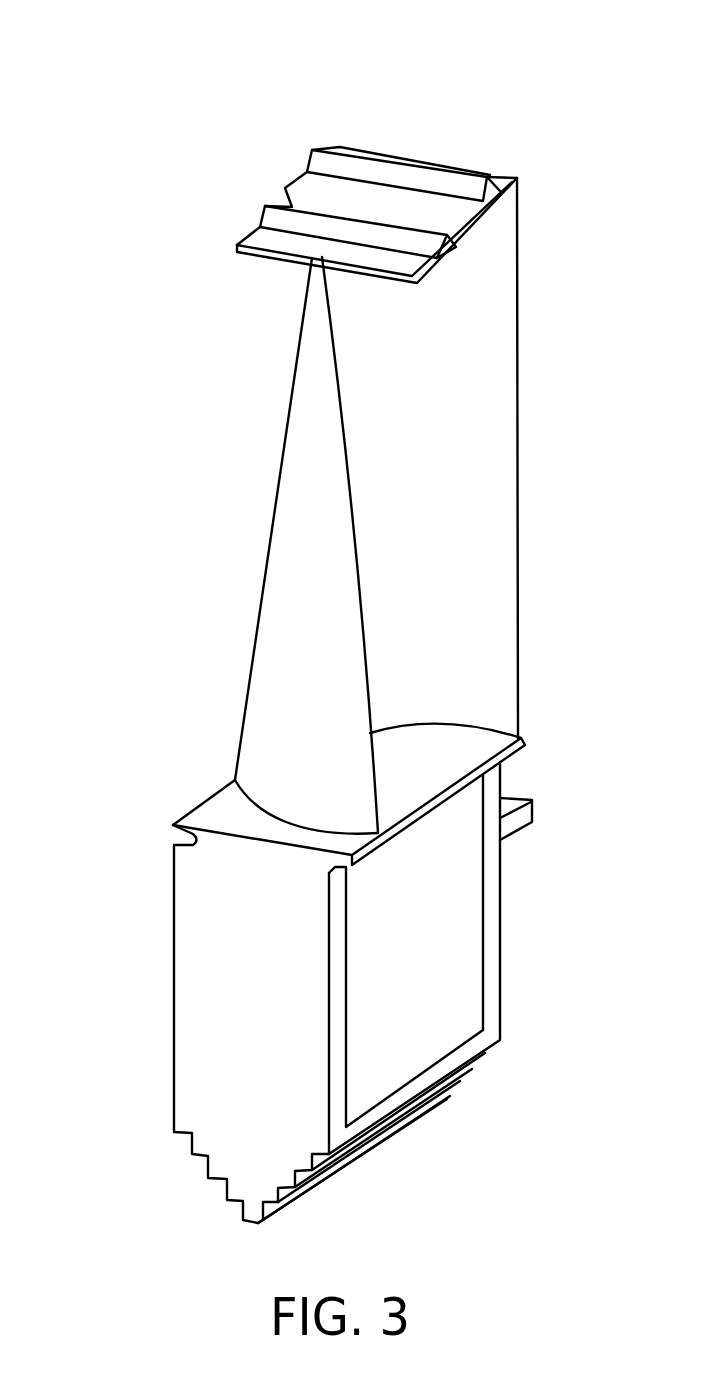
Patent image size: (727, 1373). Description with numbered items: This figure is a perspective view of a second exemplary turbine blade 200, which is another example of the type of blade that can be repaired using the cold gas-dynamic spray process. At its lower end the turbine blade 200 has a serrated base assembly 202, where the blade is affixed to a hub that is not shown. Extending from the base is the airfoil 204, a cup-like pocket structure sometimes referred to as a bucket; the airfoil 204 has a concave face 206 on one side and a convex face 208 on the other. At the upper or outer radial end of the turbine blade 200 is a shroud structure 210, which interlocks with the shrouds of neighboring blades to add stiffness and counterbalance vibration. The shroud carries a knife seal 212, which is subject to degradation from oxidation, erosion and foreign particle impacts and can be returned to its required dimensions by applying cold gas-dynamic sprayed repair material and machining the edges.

The turbine blade 200 is at (338, 647).
The serrated base assembly 202 is at (183, 1065).
The airfoil 204 is at (341, 505).
The concave face 206 is at (500, 483).
The convex face 208 is at (268, 602).
The shroud structure 210 is at (385, 146).
The knife seal 212 is at (480, 173).